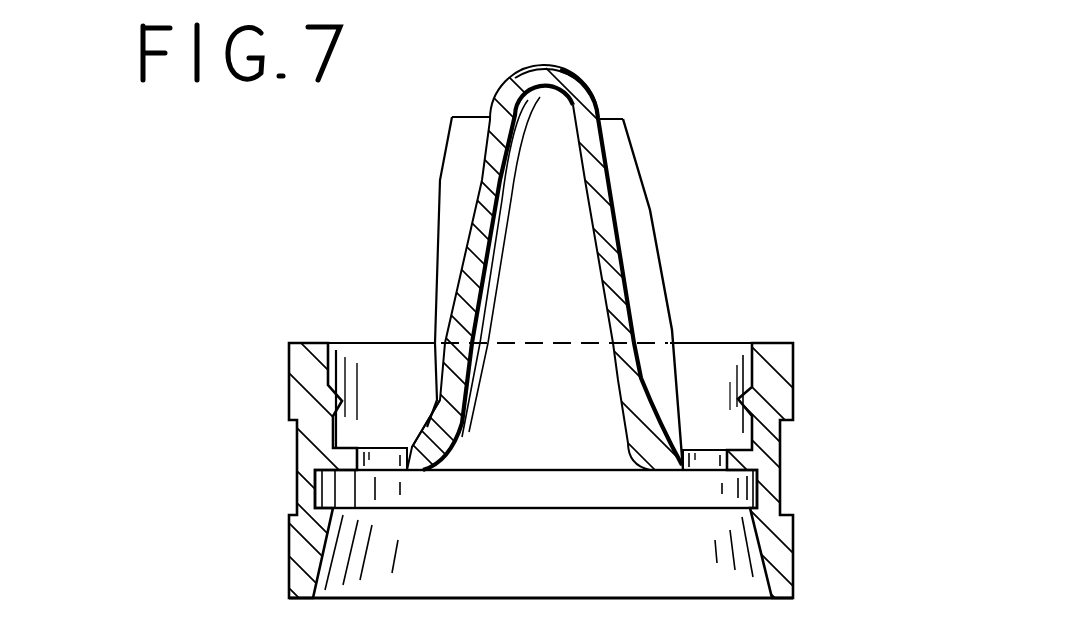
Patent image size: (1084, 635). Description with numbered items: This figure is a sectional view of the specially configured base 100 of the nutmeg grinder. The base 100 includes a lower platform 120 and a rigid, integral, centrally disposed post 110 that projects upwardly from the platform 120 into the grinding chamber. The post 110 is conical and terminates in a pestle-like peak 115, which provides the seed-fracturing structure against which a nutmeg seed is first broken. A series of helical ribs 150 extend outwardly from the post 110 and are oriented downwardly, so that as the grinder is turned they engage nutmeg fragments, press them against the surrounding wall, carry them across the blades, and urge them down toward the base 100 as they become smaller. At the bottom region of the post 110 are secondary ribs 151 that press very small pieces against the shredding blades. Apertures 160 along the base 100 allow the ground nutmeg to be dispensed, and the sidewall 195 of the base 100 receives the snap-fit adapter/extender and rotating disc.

The base 100 is at (451, 529).
The post 110 is at (600, 100).
The peak 115 is at (547, 66).
The lower platform 120 is at (740, 463).
The helical ribs 150 is at (628, 212).
The secondary ribs 151 is at (432, 432).
The apertures 160 is at (386, 462).
The sidewall 195 is at (313, 342).